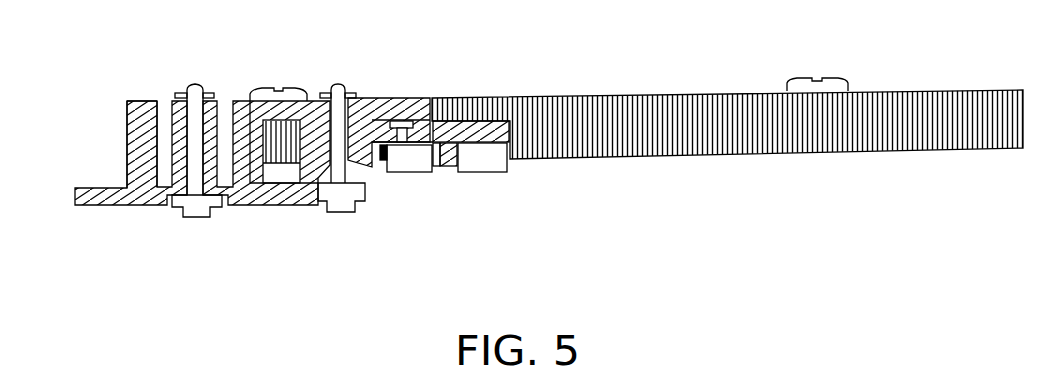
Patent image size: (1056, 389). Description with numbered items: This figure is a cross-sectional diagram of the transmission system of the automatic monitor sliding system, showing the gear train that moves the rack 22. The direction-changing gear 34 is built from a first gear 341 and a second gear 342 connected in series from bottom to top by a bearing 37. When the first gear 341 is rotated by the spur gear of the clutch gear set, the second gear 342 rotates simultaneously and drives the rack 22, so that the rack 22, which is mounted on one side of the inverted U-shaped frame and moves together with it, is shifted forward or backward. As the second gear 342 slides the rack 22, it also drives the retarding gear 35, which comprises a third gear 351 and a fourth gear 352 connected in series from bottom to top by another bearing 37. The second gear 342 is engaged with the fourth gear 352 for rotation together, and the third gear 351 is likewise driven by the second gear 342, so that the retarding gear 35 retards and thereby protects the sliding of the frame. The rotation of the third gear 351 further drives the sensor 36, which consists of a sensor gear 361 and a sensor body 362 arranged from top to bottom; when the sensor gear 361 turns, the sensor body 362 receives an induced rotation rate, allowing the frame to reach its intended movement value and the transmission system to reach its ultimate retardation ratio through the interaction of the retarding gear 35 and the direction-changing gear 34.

The rack 22 is at (882, 100).
The direction-changing gear 34 is at (186, 73).
The first gear 341 is at (90, 194).
The second gear 342 is at (137, 107).
The retarding gear 35 is at (330, 72).
The third gear 351 is at (318, 150).
The fourth gear 352 is at (373, 102).
The sensor 36 is at (479, 153).
The sensor gear 361 is at (453, 127).
The sensor body 362 is at (485, 162).
The bearing 37 is at (198, 212).